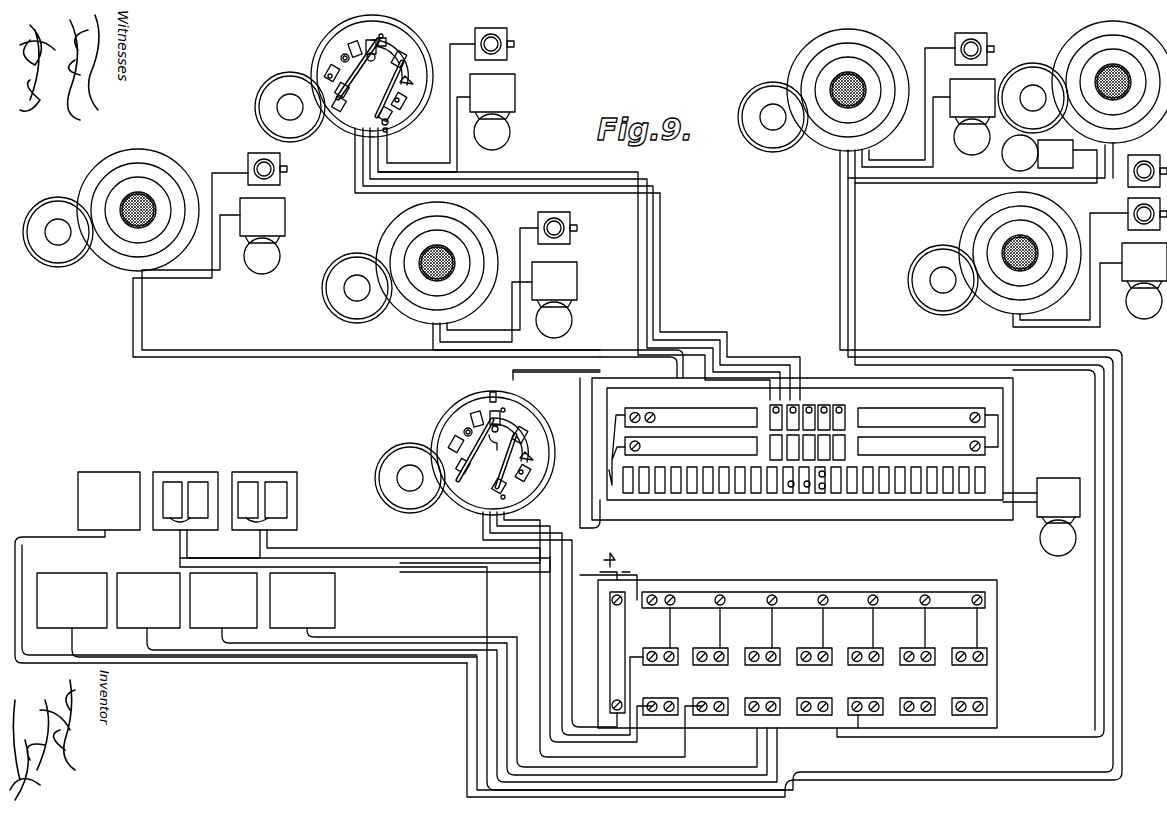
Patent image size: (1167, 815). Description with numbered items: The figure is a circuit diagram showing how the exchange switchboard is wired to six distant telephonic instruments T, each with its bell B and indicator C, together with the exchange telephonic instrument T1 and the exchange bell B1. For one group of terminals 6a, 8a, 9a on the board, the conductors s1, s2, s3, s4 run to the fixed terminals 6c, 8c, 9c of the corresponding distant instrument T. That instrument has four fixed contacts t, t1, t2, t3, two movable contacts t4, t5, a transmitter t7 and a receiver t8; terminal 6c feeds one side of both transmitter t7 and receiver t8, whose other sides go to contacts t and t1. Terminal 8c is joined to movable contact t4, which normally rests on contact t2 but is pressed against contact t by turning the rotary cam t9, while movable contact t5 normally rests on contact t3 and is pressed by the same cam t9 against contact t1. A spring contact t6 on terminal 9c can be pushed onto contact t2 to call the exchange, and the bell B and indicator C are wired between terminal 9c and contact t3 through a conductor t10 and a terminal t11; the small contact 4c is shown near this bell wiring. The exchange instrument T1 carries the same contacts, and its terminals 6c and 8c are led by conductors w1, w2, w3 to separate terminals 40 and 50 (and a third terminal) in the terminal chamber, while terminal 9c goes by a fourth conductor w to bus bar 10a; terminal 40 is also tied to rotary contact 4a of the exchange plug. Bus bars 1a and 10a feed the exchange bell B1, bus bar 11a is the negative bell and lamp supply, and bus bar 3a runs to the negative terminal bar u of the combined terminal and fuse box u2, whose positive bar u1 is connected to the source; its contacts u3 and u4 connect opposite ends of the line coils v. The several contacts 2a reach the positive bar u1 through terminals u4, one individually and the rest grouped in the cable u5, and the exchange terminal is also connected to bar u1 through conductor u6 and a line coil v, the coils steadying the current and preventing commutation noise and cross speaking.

The telephonic instrument T is at (595, 172).
The exchange telephonic instrument T1 is at (465, 453).
The indicator C is at (270, 167).
The bell B is at (703, 206).
The exchange bell B1 is at (1058, 517).
The fixed contact t is at (352, 58).
The fixed contact t1 is at (343, 57).
The fixed contact t2 is at (368, 45).
The fixed contact t3 is at (402, 58).
The movable contact t4 is at (340, 108).
The movable contact t5 is at (404, 97).
The spring contact t6 is at (383, 40).
The telephonic transmitter t7 is at (410, 80).
The telephonic receiver t8 is at (363, 69).
The rotary cam t9 is at (382, 89).
The conductor t10 is at (392, 122).
The terminal t11 is at (392, 110).
The fixed terminal 6c is at (328, 70).
The fixed terminal 8c is at (338, 90).
The fixed terminal 9c is at (386, 38).
The contact 4c is at (388, 130).
The conductor s1 is at (635, 235).
The conductor s2 is at (645, 260).
The conductor s3 is at (655, 263).
The conductor s4 is at (662, 228).
The bus bar 1a is at (921, 416).
The terminal 2a is at (848, 425).
The bus bar 3a is at (921, 445).
The rotary contact 4a is at (812, 400).
The terminal 6a is at (772, 410).
The terminal 8a is at (800, 450).
The terminal 9a is at (826, 445).
The bus bar 10a is at (691, 417).
The bus bar 11a is at (691, 446).
The terminal 40 is at (790, 538).
The terminal 50 is at (806, 522).
The negative terminal bar u is at (640, 622).
The positive terminal bar u1 is at (797, 612).
The combined terminal and fuse box u2 is at (945, 612).
The contact u3 is at (720, 658).
The terminal u4 is at (775, 703).
The trunk or cable u5 is at (1112, 605).
The conductor u6 is at (1100, 585).
The line coil v is at (104, 472).
The conductor w is at (556, 500).
The conductor w1 is at (483, 530).
The conductor w2 is at (512, 533).
The conductor w3 is at (575, 524).